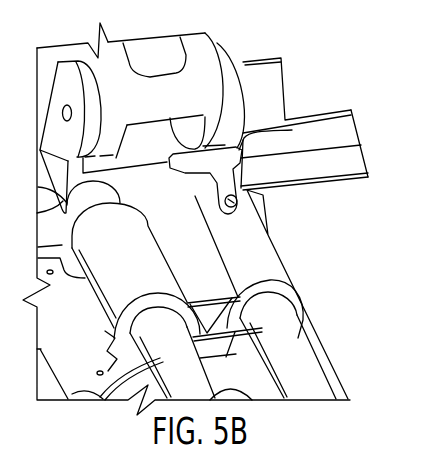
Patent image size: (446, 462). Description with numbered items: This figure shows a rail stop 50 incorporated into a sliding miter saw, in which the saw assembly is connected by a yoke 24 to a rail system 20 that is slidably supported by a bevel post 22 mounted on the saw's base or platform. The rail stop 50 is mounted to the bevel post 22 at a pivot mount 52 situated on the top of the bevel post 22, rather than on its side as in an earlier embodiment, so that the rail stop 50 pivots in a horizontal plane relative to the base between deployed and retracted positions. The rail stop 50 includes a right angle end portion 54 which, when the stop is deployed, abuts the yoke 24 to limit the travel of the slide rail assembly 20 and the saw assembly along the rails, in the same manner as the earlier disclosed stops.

The rail system 20 is at (300, 349).
The bevel post 22 is at (272, 257).
The yoke 24 is at (238, 67).
The rail stop 50 is at (292, 130).
The pivot mount 52 is at (243, 192).
The right angle end portion 54 is at (192, 147).